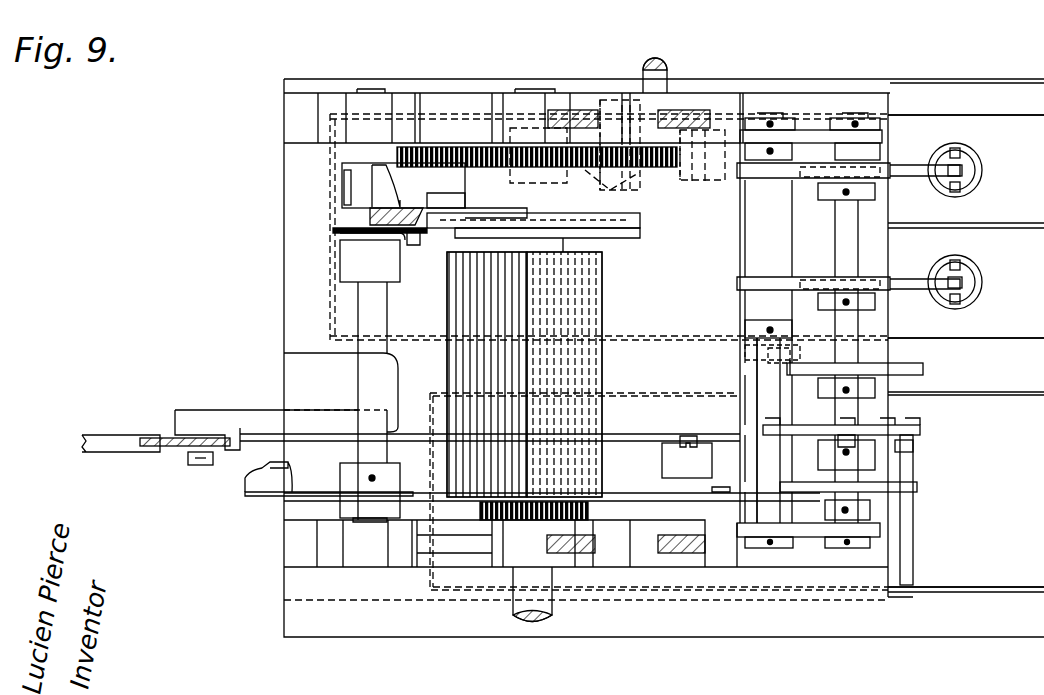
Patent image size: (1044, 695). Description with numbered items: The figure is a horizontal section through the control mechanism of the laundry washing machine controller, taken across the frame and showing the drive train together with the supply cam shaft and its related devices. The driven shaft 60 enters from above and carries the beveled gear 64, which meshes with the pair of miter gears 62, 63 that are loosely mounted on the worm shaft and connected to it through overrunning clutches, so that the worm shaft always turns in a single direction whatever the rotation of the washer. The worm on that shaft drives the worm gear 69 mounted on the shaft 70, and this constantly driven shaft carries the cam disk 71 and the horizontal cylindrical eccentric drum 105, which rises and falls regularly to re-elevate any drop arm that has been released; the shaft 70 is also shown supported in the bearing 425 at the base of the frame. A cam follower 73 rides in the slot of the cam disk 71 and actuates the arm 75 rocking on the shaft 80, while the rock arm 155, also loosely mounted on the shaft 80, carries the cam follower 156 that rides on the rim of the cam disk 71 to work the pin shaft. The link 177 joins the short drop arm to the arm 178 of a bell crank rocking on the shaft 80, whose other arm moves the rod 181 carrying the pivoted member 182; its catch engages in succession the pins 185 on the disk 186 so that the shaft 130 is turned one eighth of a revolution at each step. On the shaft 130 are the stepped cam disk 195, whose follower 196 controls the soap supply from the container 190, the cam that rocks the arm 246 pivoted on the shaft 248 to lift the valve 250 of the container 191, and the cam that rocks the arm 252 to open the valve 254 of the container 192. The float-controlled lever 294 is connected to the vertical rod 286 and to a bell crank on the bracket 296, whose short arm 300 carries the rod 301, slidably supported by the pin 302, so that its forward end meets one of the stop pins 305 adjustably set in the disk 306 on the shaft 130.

The driven shaft 60 is at (668, 75).
The beveled gear 62 is at (697, 185).
The beveled gear 63 is at (615, 175).
The beveled gear 64 is at (640, 115).
The worm gear 69 is at (458, 145).
The shaft 70 is at (520, 603).
The cam disk 71 is at (625, 240).
The cam follower 73 is at (470, 206).
The arm 75 is at (380, 215).
The shaft 80 is at (365, 372).
The eccentric drum 105 is at (583, 316).
The shaft 130 is at (847, 252).
The rock arm 155 is at (333, 237).
The cam follower 156 is at (415, 246).
The link 177 is at (297, 482).
The arm 178 is at (300, 498).
The rod 181 is at (424, 505).
The member 182 is at (627, 493).
The pins 185 is at (906, 508).
The disk 186 is at (918, 487).
The container 190 is at (958, 578).
The container 191 is at (1033, 330).
The container 192 is at (1015, 125).
The cam disk 195 is at (924, 369).
The cam follower 196 is at (787, 362).
The rock arm 246 is at (918, 291).
The shaft 248 is at (775, 348).
The valve 250 is at (975, 273).
The arm 252 is at (918, 163).
The valve 254 is at (984, 169).
The vertical rod 286 is at (212, 466).
The lever 294 is at (130, 452).
The bracket 296 is at (240, 410).
The short arm 300 is at (155, 435).
The rod 301 is at (630, 434).
The pin 302 is at (697, 436).
The stop pins 305 is at (914, 448).
The disk 306 is at (922, 430).
The bearing 425 is at (560, 520).